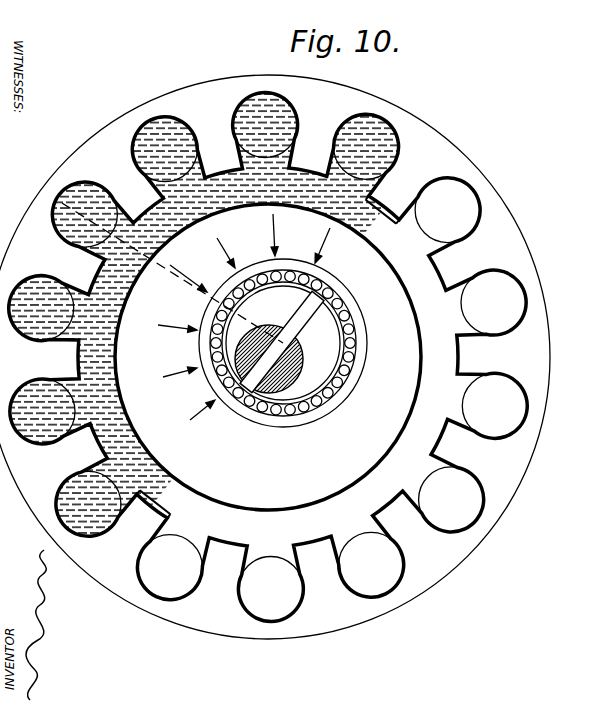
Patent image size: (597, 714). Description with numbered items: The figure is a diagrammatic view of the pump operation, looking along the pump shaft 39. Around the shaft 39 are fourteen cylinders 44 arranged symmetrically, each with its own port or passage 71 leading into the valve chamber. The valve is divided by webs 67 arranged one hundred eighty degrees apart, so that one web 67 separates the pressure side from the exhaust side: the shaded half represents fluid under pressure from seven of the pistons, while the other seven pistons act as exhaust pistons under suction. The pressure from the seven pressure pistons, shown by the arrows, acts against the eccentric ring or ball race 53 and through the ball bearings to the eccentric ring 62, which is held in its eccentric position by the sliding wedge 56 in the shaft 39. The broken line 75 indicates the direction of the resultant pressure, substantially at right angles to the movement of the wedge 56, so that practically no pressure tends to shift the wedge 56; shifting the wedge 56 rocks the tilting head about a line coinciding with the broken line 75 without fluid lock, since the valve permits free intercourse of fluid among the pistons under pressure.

The pump shaft 39 is at (273, 392).
The cylinders 44 is at (367, 141).
The ball race 53 is at (283, 423).
The sliding key or wedge 56 is at (302, 317).
The ring 62 is at (336, 371).
The web 67 is at (375, 237).
The port or passage 71 is at (350, 188).
The broken line 75 is at (167, 271).